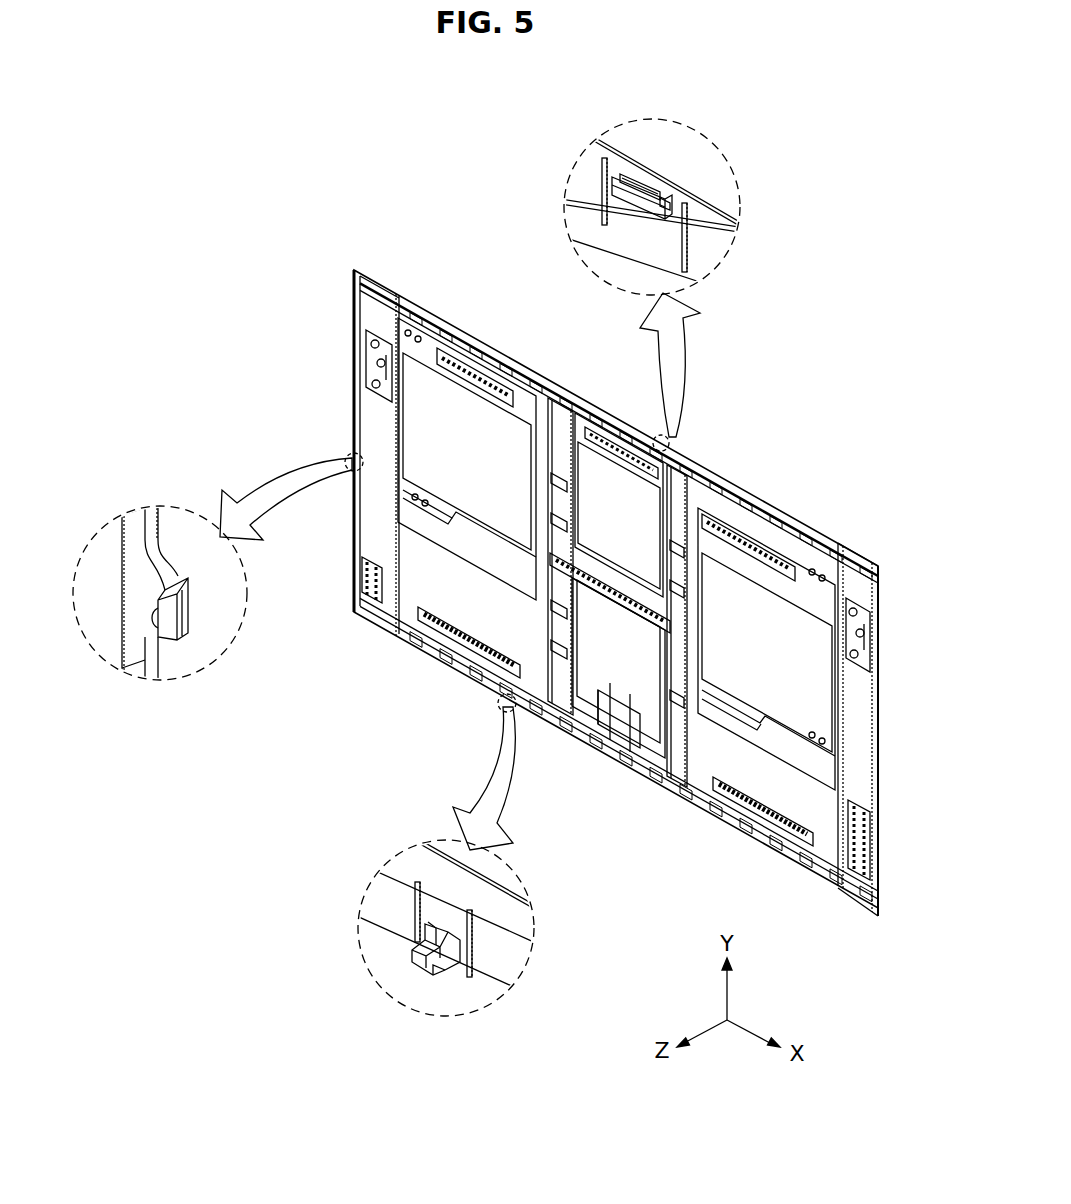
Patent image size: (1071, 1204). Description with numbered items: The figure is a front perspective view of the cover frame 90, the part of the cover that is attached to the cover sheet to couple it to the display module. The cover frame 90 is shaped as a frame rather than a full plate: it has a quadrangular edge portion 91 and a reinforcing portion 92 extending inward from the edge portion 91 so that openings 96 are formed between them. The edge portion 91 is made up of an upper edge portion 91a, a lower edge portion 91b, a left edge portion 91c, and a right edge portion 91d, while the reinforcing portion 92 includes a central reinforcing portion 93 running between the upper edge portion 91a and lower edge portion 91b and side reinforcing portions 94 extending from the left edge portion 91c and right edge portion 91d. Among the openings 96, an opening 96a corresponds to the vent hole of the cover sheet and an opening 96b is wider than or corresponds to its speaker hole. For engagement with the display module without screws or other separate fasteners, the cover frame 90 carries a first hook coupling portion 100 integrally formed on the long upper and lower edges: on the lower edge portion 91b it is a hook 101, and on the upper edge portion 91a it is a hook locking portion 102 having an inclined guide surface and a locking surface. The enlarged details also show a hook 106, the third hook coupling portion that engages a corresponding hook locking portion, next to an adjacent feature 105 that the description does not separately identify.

The cover frame 90 is at (370, 166).
The edge portion 91 is at (607, 593).
The upper edge portion 91a is at (619, 433).
The lower edge portion 91b is at (619, 749).
The left edge portion 91c is at (354, 303).
The right edge portion 91d is at (878, 598).
The reinforcing portion 92 is at (625, 578).
The central reinforcing portion 93 is at (578, 517).
The side reinforcing portions 94 is at (372, 367).
The openings 96 is at (439, 466).
The opening 96a is at (444, 370).
The opening 96b is at (405, 580).
The first hook coupling portion 100 is at (628, 170).
The hook 101 is at (420, 972).
The hook locking portion 102 is at (660, 192).
The latch protrusion 105 is at (152, 587).
The hook 106 is at (156, 627).